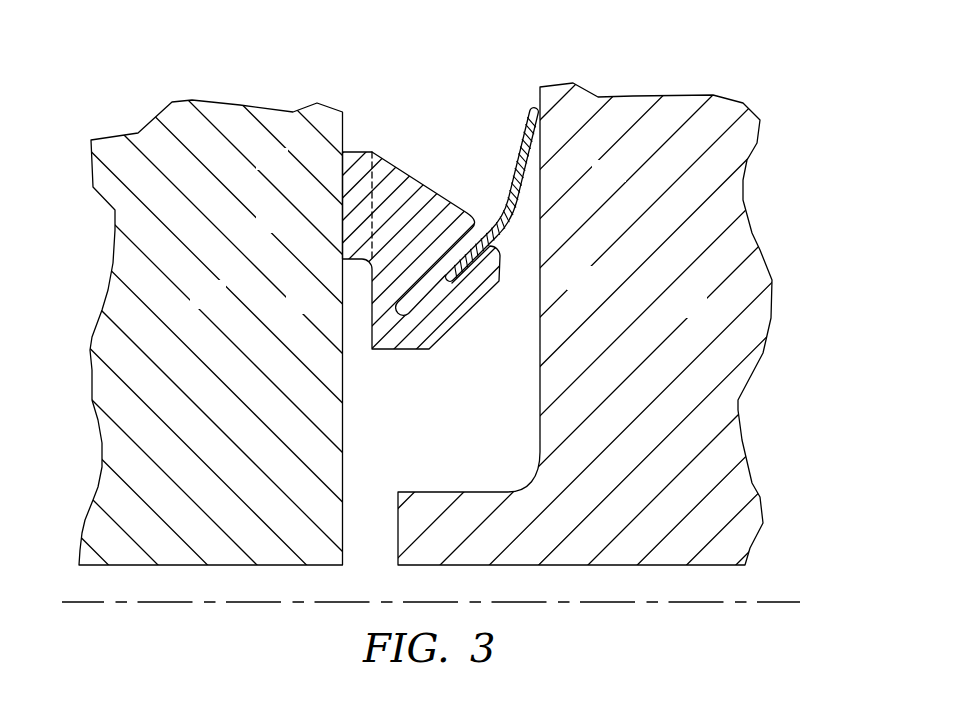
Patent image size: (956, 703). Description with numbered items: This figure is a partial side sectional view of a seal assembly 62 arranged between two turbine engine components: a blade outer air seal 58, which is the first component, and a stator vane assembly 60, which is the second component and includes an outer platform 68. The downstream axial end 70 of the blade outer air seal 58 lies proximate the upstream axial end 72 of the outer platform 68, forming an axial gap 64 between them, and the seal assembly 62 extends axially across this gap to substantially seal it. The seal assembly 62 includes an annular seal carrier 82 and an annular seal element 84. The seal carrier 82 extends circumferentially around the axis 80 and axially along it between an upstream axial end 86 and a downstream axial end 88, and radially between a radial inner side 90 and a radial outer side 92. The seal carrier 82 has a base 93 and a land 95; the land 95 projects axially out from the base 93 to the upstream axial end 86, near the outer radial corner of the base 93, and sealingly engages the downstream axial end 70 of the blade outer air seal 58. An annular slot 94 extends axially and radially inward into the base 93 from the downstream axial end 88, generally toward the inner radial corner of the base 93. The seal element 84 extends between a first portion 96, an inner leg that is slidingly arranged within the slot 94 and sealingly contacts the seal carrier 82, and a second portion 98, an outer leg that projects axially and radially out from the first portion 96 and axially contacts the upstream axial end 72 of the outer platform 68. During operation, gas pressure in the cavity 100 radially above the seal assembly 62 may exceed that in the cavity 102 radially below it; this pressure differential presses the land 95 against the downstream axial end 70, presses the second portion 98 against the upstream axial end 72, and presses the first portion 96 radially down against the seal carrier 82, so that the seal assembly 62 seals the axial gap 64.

The blade outer air seal 58 is at (223, 307).
The stator vane assembly 60 is at (751, 405).
The seal assembly 62 is at (437, 90).
The axial gap 64 is at (495, 78).
The outer platform 68 is at (704, 316).
The downstream axial end 70 is at (344, 129).
The upstream axial end 72 is at (533, 103).
The axis 80 is at (770, 601).
The seal carrier 82 is at (468, 320).
The seal element 84 is at (536, 184).
The upstream axial end 86 is at (381, 227).
The downstream axial end 88 is at (501, 266).
The radial inner side 90 is at (400, 350).
The radial outer side 92 is at (362, 150).
The base 93 is at (384, 282).
The annular slot 94 is at (424, 306).
The land 95 is at (354, 177).
The first portion 96 is at (459, 273).
The second portion 98 is at (534, 118).
The cavity 100 is at (405, 33).
The cavity 102 is at (443, 472).